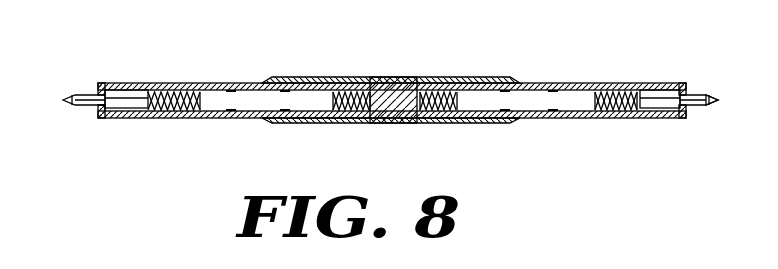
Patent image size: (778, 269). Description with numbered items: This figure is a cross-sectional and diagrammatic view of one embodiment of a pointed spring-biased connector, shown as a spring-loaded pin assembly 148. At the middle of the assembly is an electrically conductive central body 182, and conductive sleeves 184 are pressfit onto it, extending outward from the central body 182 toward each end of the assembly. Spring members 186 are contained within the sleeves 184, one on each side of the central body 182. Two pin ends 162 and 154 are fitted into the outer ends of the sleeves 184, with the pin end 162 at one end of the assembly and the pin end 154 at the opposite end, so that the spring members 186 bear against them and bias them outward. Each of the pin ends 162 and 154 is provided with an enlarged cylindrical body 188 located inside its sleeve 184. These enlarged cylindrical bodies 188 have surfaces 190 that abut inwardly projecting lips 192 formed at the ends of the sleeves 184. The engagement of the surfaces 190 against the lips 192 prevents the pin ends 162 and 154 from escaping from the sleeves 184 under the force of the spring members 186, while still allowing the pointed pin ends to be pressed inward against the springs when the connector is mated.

The spring-loaded pin assembly 148 is at (347, 75).
The pin end 154 is at (700, 93).
The pin end 162 is at (120, 111).
The central body 182 is at (397, 77).
The conductive sleeves 184 is at (207, 83).
The spring members 186 is at (337, 108).
The enlarged cylindrical bodies 188 is at (133, 94).
The surfaces 190 is at (97, 92).
The inwardly projecting lips 192 is at (97, 112).